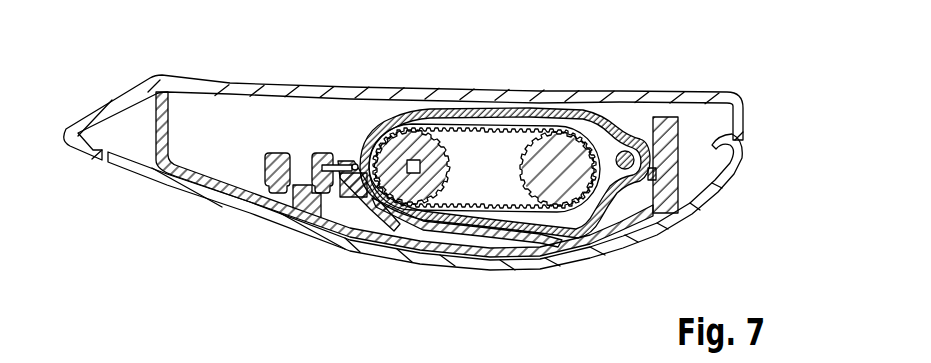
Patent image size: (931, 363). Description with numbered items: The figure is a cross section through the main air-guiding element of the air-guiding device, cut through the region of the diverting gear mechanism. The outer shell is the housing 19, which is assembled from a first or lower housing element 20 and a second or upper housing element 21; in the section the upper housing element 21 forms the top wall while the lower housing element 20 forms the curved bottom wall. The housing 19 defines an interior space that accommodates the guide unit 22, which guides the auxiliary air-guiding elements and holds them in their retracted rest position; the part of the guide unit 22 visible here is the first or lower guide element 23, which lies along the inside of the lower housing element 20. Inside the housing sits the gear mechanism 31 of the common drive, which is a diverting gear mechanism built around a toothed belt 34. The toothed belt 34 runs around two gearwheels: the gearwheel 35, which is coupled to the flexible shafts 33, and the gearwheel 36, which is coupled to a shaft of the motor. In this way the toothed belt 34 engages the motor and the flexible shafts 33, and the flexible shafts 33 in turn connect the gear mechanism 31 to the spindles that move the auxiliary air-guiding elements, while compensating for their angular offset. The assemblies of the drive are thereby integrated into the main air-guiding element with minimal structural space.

The housing 19 is at (403, 160).
The lower housing element 20 is at (267, 222).
The upper housing element 21 is at (280, 90).
The guide unit 22 is at (404, 214).
The lower guide element 23 is at (423, 247).
The gear mechanism 31 is at (484, 120).
The flexible shaft 33 is at (509, 138).
The toothed belt 34 is at (478, 123).
The gearwheel 35 is at (428, 150).
The gearwheel 36 is at (572, 152).